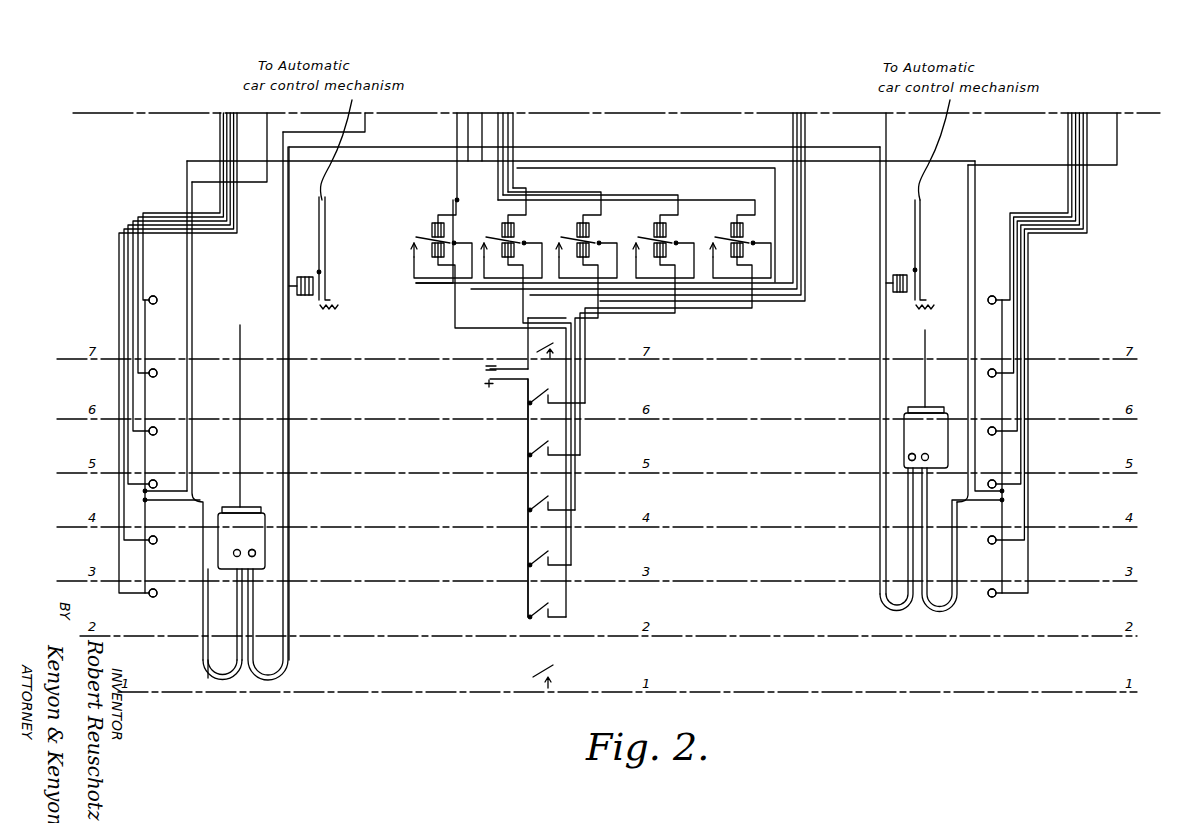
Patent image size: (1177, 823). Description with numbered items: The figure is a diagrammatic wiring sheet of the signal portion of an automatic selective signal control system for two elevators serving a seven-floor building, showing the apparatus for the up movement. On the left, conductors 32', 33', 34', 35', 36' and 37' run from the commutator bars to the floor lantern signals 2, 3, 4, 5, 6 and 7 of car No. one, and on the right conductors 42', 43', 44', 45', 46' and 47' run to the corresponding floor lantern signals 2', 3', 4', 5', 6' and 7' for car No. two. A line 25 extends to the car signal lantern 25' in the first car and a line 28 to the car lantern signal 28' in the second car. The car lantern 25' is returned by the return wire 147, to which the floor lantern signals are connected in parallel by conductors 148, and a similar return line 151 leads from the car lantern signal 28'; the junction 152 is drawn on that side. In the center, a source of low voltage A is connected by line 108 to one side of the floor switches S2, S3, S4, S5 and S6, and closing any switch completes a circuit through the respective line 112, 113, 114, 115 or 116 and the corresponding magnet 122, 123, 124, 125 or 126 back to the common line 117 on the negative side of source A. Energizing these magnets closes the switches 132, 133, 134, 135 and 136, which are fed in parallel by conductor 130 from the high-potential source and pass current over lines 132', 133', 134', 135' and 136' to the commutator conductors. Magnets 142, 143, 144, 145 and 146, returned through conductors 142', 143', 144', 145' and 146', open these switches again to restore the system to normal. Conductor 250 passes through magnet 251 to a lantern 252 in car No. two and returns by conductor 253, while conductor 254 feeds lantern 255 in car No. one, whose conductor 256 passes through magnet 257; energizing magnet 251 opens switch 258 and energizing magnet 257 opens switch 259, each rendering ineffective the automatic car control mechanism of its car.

The floor lantern signal 2 is at (160, 585).
The floor lantern signal 3 is at (160, 532).
The floor lantern signal 4 is at (160, 476).
The floor lantern signal 5 is at (160, 423).
The floor lantern signal 6 is at (160, 365).
The floor lantern signal 7 is at (161, 292).
The floor lantern signal member 2' is at (986, 586).
The floor lantern signal member 3' is at (986, 533).
The floor lantern signal member 4' is at (986, 477).
The floor lantern signal member 5' is at (986, 424).
The floor lantern signal member 6' is at (986, 366).
The floor lantern signal member 7' is at (986, 293).
The line 25 is at (229, 408).
The car signal lantern 25' is at (241, 447).
The line 28 is at (1038, 362).
The car lantern signal 28' is at (915, 399).
The conductor 32' is at (205, 208).
The conductor 33' is at (204, 245).
The conductor 34' is at (202, 274).
The conductor 35' is at (199, 300).
The conductor 36' is at (197, 328).
The conductor 37' is at (195, 355).
The conductor 42' is at (1060, 208).
The conductor 43' is at (1061, 245).
The conductor 44' is at (1061, 274).
The conductor 45' is at (1061, 300).
The conductor 46' is at (1060, 328).
The conductor 47' is at (1052, 355).
The line 108 is at (527, 494).
The line 112 is at (453, 322).
The line 113 is at (518, 296).
The line 114 is at (598, 296).
The line 115 is at (668, 312).
The line 116 is at (748, 308).
The common line 117 is at (527, 346).
The magnet 122 is at (414, 250).
The magnet 123 is at (498, 258).
The magnet 124 is at (570, 258).
The magnet 125 is at (646, 258).
The magnet 126 is at (724, 258).
The conductor 130 is at (775, 210).
The switch 132 is at (417, 232).
The switch 133 is at (488, 232).
The switch 134 is at (563, 232).
The switch 135 is at (640, 232).
The switch 136 is at (717, 232).
The line 132' is at (425, 298).
The line 133' is at (462, 317).
The line 134' is at (611, 322).
The line 135' is at (646, 323).
The line 136' is at (708, 322).
The magnet 142 is at (429, 218).
The magnet 143 is at (505, 212).
The magnet 144 is at (554, 214).
The magnet 145 is at (590, 216).
The magnet 146 is at (626, 218).
The conductor 142' is at (433, 195).
The conductor 143' is at (537, 178).
The conductor 144' is at (596, 180).
The conductor 145' is at (664, 181).
The conductor 146' is at (730, 184).
The return wire 147 is at (188, 392).
The conductors 148 is at (143, 491).
The return line 151 is at (978, 188).
The conductor junction 152 is at (1004, 491).
The conductor 250 is at (894, 135).
The magnet 251 is at (900, 274).
The lantern 252 is at (908, 457).
The conductor 253 is at (879, 316).
The conductor 254 is at (368, 128).
The lantern 255 is at (256, 553).
The conductor 256 is at (385, 150).
The magnet 257 is at (304, 270).
The switch 258 is at (922, 285).
The switch 259 is at (326, 280).
The source of low voltage A is at (499, 491).
The switch S2 is at (547, 605).
The switch S3 is at (549, 553).
The switch S4 is at (551, 498).
The switch S5 is at (554, 443).
The switch S6 is at (556, 391).